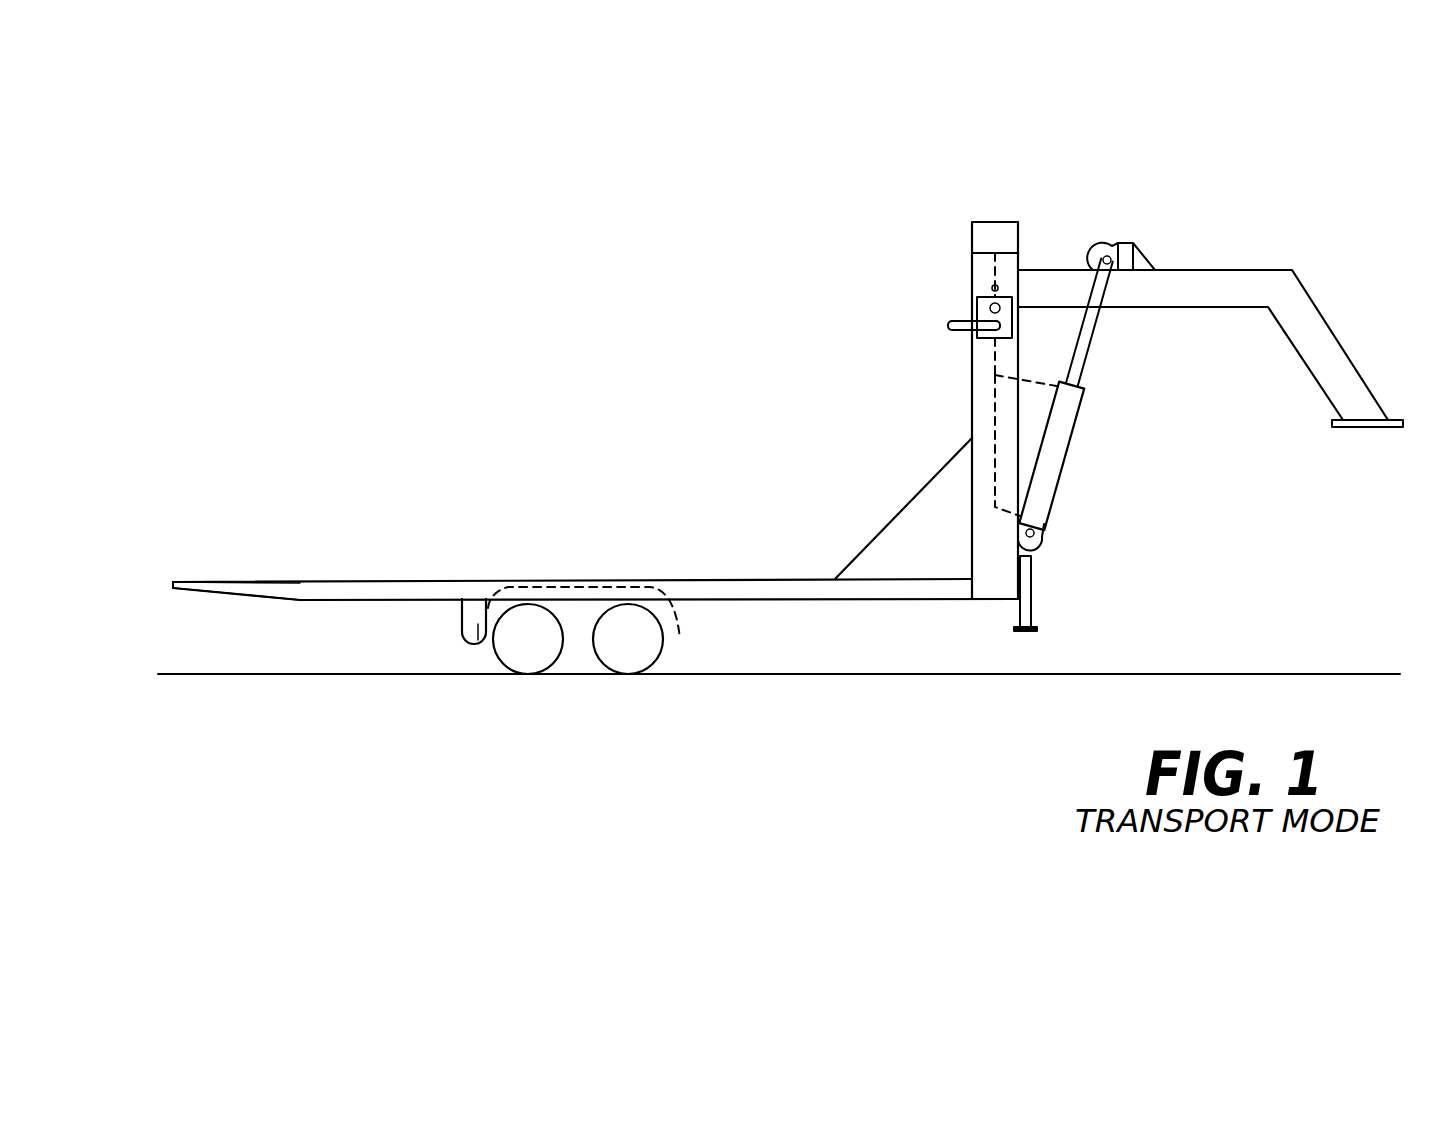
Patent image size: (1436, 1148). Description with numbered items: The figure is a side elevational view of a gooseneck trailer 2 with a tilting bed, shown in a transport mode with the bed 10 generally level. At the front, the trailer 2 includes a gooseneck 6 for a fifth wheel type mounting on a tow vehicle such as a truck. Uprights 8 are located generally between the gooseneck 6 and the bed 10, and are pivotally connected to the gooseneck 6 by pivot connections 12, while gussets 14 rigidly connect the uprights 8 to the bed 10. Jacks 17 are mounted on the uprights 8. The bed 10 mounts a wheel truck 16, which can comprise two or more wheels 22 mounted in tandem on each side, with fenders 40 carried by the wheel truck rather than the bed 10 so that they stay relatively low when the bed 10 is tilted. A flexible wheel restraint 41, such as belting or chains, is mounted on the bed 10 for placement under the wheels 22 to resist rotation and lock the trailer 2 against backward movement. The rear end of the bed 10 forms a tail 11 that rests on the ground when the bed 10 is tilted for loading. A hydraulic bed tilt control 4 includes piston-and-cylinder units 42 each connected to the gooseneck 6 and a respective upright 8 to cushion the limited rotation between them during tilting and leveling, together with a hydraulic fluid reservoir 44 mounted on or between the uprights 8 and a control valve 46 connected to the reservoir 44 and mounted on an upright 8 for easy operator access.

The trailer 2 is at (496, 258).
The hydraulic bed tilt control 4 is at (1104, 449).
The gooseneck 6 is at (1290, 268).
The uprights 8 is at (970, 404).
The bed 10 is at (678, 578).
The tail 11 is at (222, 593).
The pivot connections 12 is at (992, 287).
The gussets 14 is at (946, 558).
The wheel truck 16 is at (615, 687).
The jacks 17 is at (1032, 590).
The wheels 22 is at (548, 653).
The fenders 40 is at (522, 574).
The flexible wheel restraint 41 is at (460, 640).
The piston-and-cylinder units 42 is at (1085, 387).
The hydraulic fluid reservoir 44 is at (975, 222).
The control valve 46 is at (978, 298).